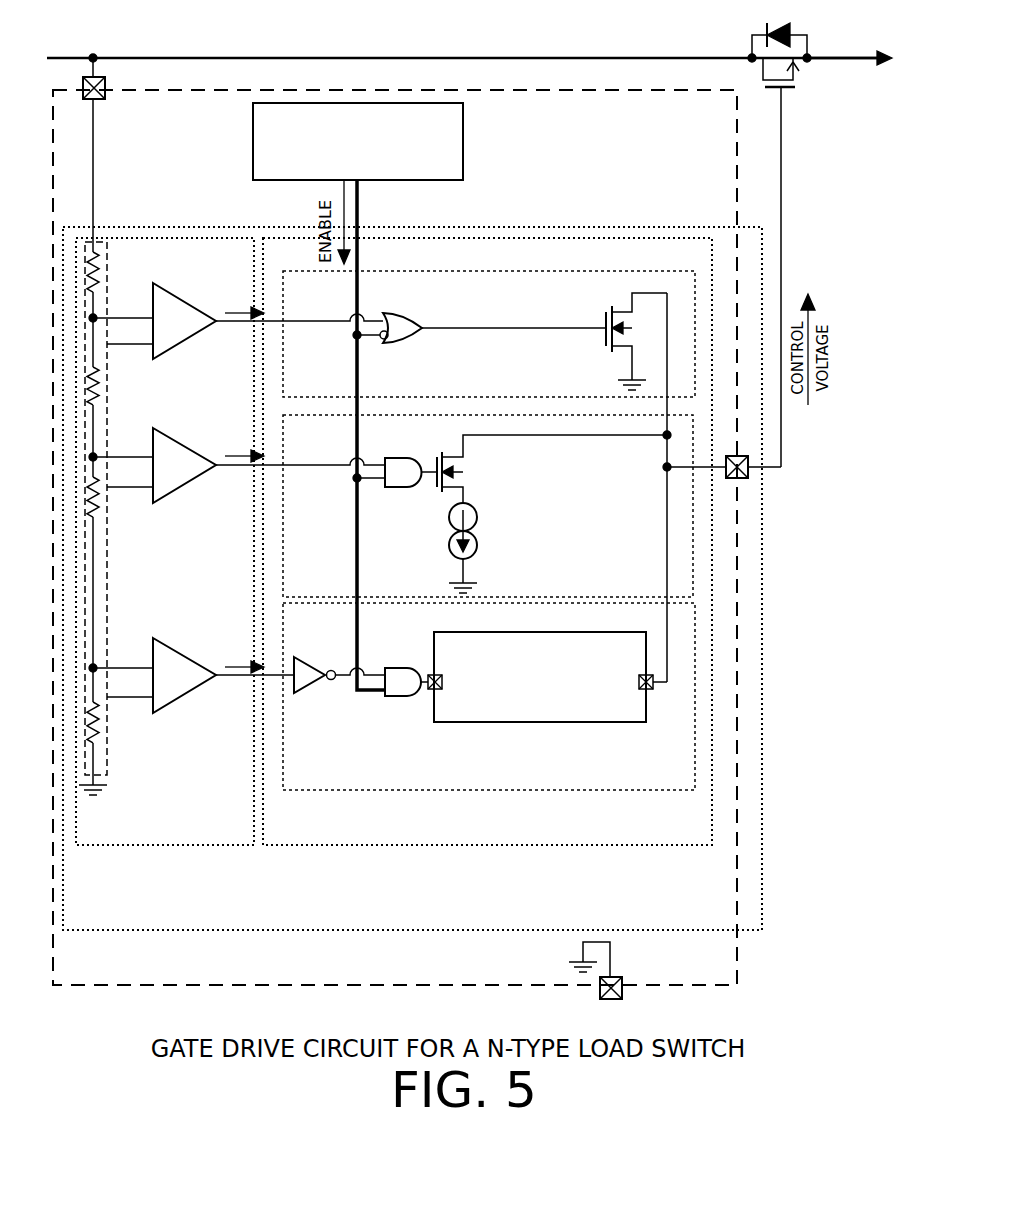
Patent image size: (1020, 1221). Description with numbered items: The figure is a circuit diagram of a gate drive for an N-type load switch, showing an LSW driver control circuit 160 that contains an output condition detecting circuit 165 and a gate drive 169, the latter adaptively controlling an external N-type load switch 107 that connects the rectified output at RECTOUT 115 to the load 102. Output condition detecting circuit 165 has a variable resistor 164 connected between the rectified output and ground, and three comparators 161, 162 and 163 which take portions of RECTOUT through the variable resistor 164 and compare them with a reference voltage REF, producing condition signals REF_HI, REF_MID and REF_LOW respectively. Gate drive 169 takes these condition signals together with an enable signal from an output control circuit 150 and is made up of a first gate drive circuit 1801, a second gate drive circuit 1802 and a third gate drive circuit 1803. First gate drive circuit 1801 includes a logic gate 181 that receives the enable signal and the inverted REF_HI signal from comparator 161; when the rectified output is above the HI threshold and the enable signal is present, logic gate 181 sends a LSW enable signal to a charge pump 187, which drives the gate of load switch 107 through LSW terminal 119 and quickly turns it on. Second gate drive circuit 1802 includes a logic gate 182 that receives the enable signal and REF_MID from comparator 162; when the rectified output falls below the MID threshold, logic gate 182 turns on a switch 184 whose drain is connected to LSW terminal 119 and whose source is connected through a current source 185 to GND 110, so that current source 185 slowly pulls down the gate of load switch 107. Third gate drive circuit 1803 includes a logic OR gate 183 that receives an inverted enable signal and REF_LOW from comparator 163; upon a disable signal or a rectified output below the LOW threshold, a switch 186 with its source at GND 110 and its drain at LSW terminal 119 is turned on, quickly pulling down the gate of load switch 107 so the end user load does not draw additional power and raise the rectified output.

The load 102 is at (849, 37).
The load switch 107 is at (779, 90).
The GND 110 is at (622, 985).
The RECTOUT 115 is at (105, 92).
The LSW terminal 119 is at (748, 470).
The output control circuit 150 is at (358, 141).
The LSW driver control circuit 160 is at (412, 578).
The comparator 161 is at (190, 641).
The comparator 162 is at (190, 431).
The comparator 163 is at (190, 286).
The variable resistor 164 is at (107, 251).
The output condition detecting circuit 165 is at (165, 541).
The gate drive 169 is at (487, 541).
The logic gate 181 is at (397, 668).
The logic gate 182 is at (397, 458).
The logic OR gate 183 is at (400, 302).
The switch 184 is at (463, 490).
The current source 185 is at (473, 540).
The switch 186 is at (612, 311).
The charge pump 187 is at (547, 677).
The first gate drive circuit 1801 is at (489, 696).
The second gate drive circuit 1802 is at (488, 506).
The third gate drive circuit 1803 is at (489, 334).